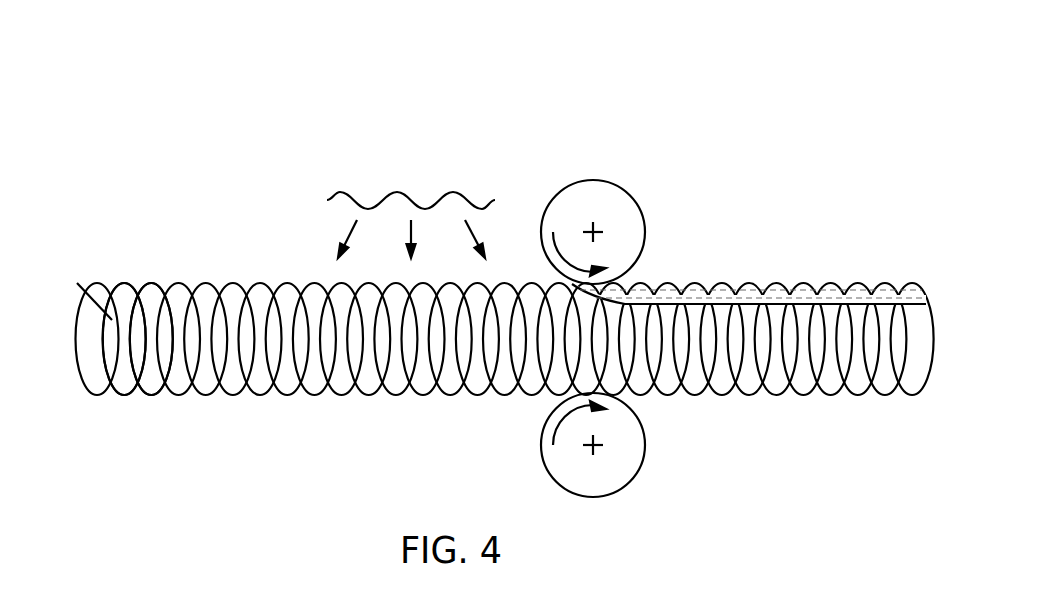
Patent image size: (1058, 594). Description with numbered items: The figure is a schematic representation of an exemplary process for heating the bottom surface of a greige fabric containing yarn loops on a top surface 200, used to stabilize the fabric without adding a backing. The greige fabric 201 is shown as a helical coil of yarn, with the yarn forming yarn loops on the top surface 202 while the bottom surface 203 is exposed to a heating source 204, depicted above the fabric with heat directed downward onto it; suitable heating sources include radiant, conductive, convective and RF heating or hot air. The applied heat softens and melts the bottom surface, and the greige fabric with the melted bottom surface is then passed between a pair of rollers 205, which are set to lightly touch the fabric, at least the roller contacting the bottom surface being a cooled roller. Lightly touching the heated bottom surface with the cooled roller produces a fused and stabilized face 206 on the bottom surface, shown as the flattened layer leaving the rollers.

The process for heating the bottom surface of a greige fabric 200 is at (824, 58).
The greige fabric 201 is at (100, 337).
The top surface 202 is at (155, 395).
The bottom surface 203 is at (128, 283).
The heating source 204 is at (340, 192).
The pair of rollers 205 is at (645, 229).
The fused and stabilized face 206 is at (790, 293).